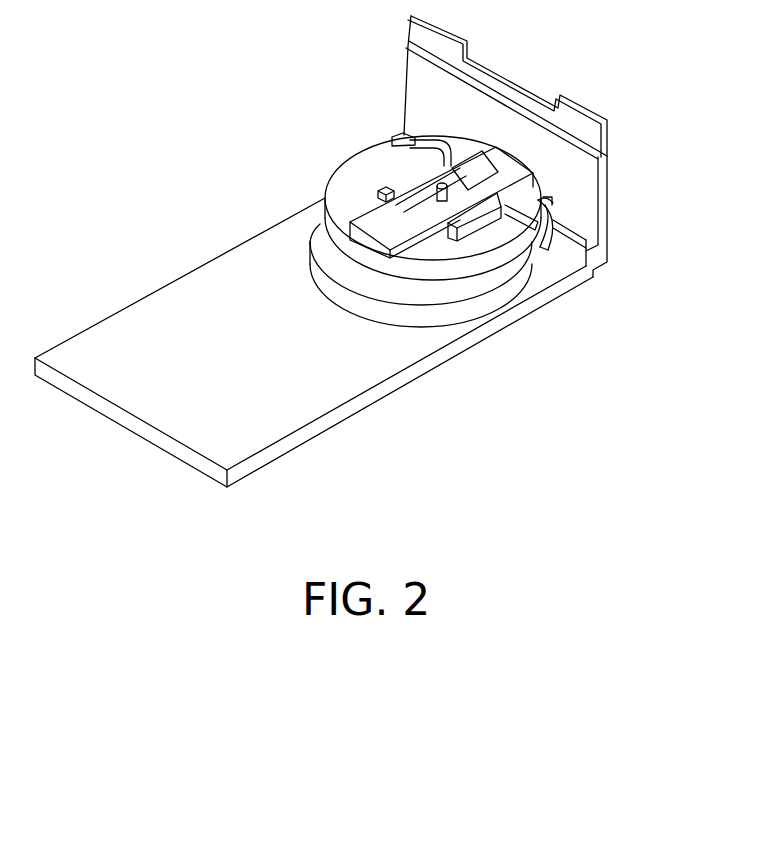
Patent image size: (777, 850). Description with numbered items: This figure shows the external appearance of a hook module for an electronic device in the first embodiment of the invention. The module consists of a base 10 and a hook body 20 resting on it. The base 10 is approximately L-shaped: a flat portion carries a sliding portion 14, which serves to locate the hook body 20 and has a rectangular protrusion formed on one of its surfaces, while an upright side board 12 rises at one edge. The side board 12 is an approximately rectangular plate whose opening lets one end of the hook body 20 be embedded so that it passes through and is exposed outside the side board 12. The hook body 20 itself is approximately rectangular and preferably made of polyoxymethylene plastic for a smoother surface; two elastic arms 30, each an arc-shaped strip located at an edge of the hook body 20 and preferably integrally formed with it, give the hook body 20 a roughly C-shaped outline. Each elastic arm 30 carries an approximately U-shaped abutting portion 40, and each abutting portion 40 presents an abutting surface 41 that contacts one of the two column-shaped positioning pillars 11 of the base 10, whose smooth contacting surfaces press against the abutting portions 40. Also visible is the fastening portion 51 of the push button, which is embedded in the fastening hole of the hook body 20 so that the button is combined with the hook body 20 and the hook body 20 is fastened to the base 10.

The base 10 is at (134, 283).
The positioning pillar 11 is at (400, 131).
The side board 12 is at (586, 108).
The sliding portion 14 is at (350, 266).
The hook body 20 is at (373, 246).
The elastic arm 30 is at (487, 268).
The abutting portion 40 is at (492, 219).
The abutting surface 41 is at (423, 162).
The fastening portion 51 is at (433, 195).